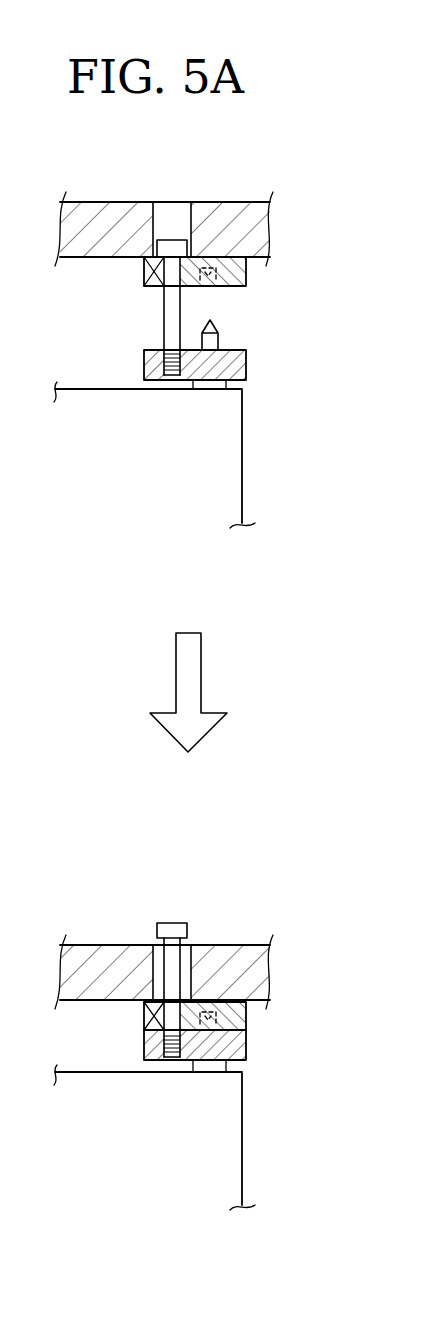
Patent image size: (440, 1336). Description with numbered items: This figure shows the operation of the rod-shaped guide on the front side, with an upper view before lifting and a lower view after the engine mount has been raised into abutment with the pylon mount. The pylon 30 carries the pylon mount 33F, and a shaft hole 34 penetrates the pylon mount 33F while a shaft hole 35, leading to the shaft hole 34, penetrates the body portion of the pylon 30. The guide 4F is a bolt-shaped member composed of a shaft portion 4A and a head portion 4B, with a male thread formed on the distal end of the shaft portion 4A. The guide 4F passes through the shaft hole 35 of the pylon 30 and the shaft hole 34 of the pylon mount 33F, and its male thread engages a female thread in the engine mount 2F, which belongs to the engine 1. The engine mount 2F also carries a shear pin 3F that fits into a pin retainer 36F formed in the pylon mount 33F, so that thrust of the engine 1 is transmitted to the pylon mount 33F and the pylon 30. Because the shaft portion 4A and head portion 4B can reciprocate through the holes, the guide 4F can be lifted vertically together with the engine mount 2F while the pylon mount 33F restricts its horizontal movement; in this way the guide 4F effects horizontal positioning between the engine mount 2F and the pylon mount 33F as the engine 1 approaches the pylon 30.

The engine 1 is at (243, 453).
The engine mount 2F is at (247, 369).
The shear pin 3F is at (218, 338).
The shaft portion 4A is at (163, 308).
The head portion 4B is at (168, 238).
The guide 4F is at (163, 335).
The pylon 30 is at (273, 217).
The pylon mount 33F is at (247, 272).
The shaft hole 34 is at (153, 274).
The shaft hole 35 is at (162, 203).
The pin retainer 36F is at (240, 288).